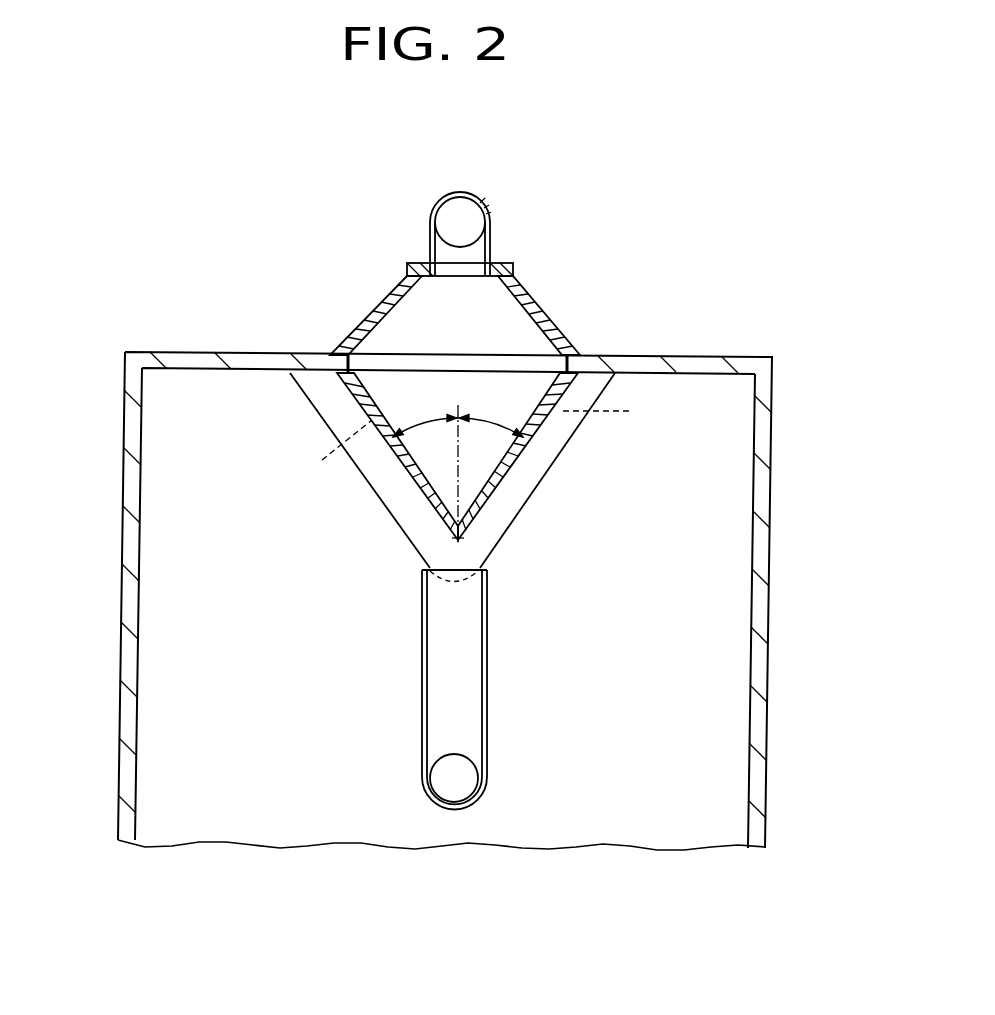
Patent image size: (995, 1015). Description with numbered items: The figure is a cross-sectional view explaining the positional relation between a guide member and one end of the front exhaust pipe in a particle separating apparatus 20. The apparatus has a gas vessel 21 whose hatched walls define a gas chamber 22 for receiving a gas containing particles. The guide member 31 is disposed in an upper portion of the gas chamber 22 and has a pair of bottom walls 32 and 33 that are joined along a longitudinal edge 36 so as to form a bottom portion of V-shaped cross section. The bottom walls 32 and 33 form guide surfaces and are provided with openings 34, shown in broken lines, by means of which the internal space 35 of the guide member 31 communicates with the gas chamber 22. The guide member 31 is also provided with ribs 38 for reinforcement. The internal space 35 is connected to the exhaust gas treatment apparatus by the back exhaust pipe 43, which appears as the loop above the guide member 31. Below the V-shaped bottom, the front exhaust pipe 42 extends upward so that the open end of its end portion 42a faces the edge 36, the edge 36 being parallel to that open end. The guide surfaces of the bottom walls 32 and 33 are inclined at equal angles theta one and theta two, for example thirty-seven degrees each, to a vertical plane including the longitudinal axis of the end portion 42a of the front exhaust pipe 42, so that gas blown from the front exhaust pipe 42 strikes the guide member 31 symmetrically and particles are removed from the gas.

The particle separating apparatus 20 is at (312, 272).
The gas vessel 21 is at (125, 432).
The gas chamber 22 is at (190, 487).
The guide member 31 is at (377, 303).
The bottom wall 32 is at (533, 437).
The bottom wall 33 is at (390, 453).
The openings 34 is at (480, 440).
The internal space 35 is at (515, 390).
The longitudinal edge 36 is at (460, 538).
The ribs 38 is at (528, 483).
The front exhaust pipe 42 is at (487, 657).
The end portion of front exhaust pipe 42a is at (463, 563).
The back exhaust pipe 43 is at (473, 212).